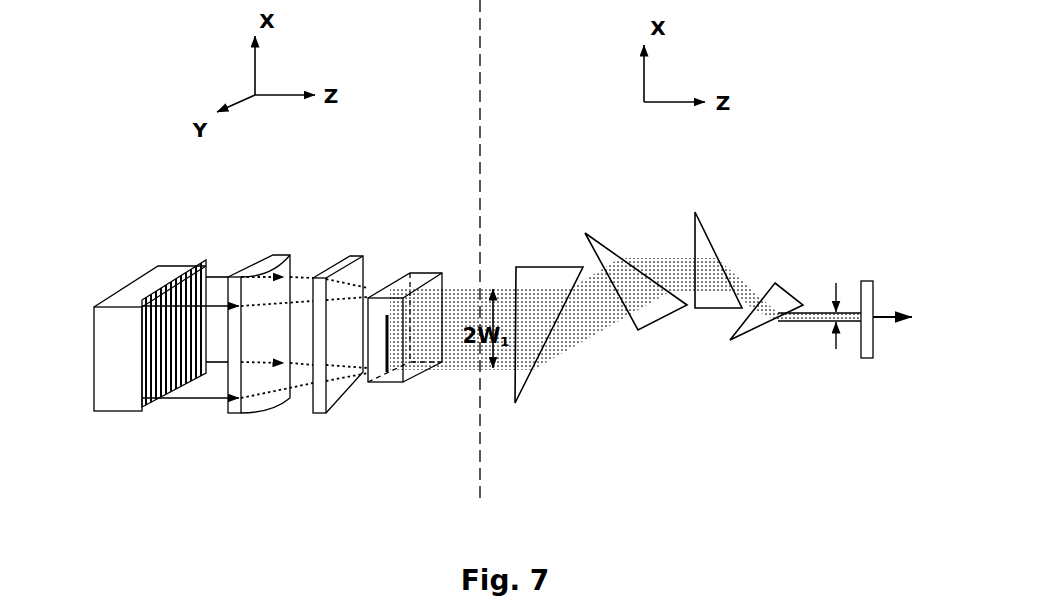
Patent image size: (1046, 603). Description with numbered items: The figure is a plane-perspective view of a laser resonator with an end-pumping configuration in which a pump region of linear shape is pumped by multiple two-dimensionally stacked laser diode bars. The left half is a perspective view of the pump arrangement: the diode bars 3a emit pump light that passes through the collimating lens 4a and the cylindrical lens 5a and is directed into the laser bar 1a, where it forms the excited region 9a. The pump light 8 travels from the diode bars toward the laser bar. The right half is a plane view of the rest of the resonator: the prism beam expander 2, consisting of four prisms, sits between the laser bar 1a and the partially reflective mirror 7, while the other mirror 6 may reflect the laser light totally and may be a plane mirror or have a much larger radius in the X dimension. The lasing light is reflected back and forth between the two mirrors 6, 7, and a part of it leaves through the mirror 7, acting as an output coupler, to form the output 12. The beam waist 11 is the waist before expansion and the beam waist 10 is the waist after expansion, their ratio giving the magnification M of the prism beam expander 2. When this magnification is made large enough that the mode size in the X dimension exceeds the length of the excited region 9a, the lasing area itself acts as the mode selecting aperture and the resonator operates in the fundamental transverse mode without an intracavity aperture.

The laser bar 1a is at (433, 283).
The prism beam expander 2 is at (523, 192).
The diode bars 3a is at (125, 398).
The collimating lens 4a is at (173, 291).
The cylindrical lens 5a is at (263, 413).
The mirror 6 is at (343, 390).
The mirror 7 is at (868, 358).
The pump beams 8 is at (205, 400).
The excited region 9a is at (387, 315).
The beam waist 10 is at (488, 372).
The beam waist 11 is at (815, 348).
The output 12 is at (882, 316).